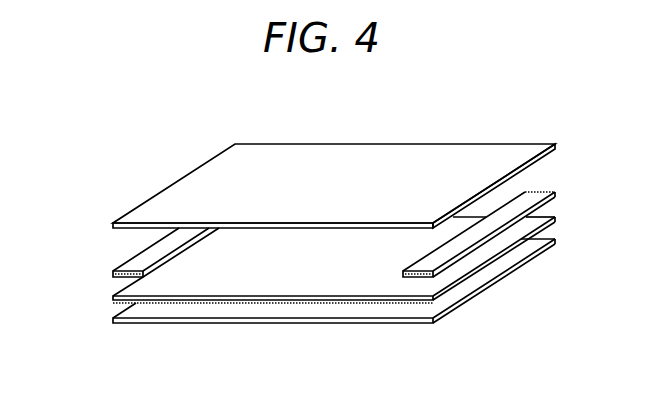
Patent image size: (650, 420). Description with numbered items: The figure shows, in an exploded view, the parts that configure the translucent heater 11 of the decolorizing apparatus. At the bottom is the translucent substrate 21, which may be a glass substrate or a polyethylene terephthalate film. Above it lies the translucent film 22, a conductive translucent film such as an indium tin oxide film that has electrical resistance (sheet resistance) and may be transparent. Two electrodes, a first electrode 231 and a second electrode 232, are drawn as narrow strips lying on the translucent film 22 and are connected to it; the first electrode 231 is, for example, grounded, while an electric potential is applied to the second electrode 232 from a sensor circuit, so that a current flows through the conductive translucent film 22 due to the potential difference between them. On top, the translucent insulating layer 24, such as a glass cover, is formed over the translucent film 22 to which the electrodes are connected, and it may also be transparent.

The translucent heater 11 is at (187, 144).
The insulating layer 24 is at (412, 158).
The second electrode 232 is at (118, 258).
The first electrode 231 is at (495, 222).
The translucent film 22 is at (470, 263).
The translucent substrate 21 is at (443, 303).